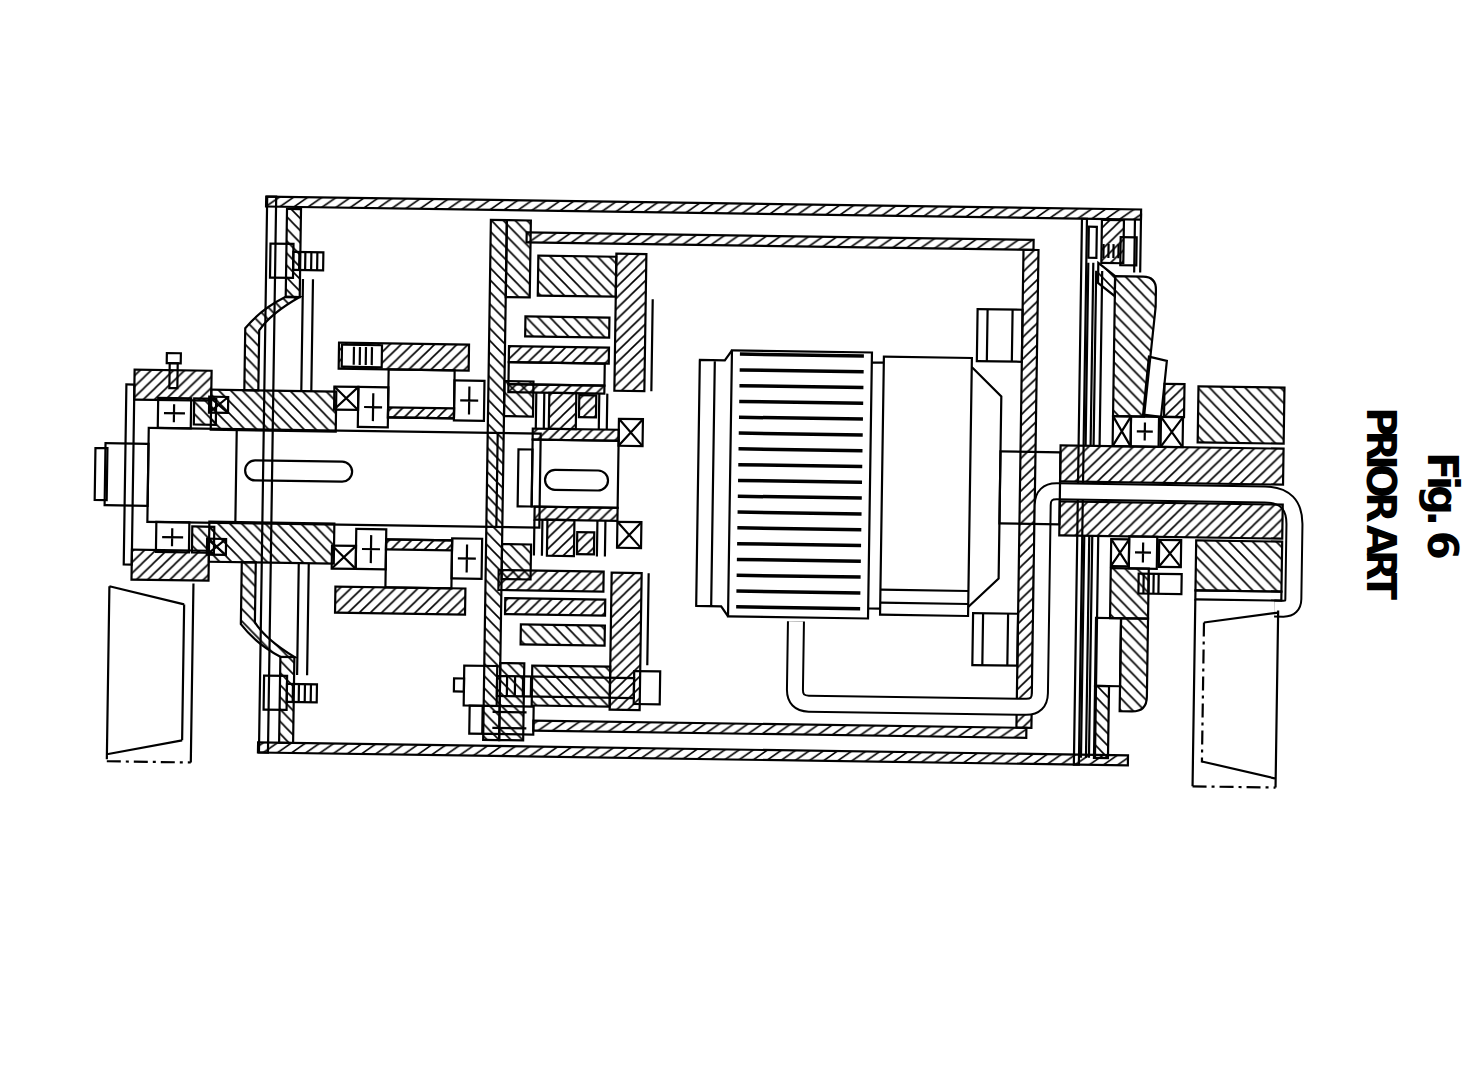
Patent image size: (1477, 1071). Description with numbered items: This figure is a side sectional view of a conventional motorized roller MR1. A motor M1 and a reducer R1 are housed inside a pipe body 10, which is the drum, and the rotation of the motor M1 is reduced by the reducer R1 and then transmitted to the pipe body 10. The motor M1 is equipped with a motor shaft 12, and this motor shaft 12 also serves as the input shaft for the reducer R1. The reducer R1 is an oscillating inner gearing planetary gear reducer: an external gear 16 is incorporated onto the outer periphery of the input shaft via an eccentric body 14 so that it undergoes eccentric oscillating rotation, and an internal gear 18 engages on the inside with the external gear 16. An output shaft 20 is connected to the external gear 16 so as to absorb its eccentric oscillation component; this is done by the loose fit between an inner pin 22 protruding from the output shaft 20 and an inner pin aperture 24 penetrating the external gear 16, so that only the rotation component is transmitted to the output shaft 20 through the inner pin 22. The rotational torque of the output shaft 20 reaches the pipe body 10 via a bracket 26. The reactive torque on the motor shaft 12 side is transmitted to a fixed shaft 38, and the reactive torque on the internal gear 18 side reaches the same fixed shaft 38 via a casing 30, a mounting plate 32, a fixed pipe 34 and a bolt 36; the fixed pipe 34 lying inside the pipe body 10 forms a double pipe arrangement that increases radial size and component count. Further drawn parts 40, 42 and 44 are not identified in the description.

The pipe body 10 is at (631, 206).
The motor shaft 12 is at (607, 491).
The eccentric body 14 is at (650, 380).
The external gear 16 is at (585, 639).
The internal gear 18 is at (600, 641).
The output shaft 20 is at (320, 508).
The inner pin 22 is at (532, 364).
The inner pin aperture 24 is at (640, 350).
The bracket 26 is at (240, 318).
The casing 30 is at (390, 350).
The mounting plate 32 is at (487, 258).
The fixed pipe 34 is at (736, 231).
The bolt 36 is at (1075, 347).
The fixed shaft 38 is at (1225, 467).
The pulley 40 is at (130, 770).
The bolt 42 is at (163, 378).
The bearing cover 44 is at (126, 441).
The motor M1 is at (851, 642).
The motorized roller MR1 is at (931, 118).
The reducer R1 is at (615, 816).